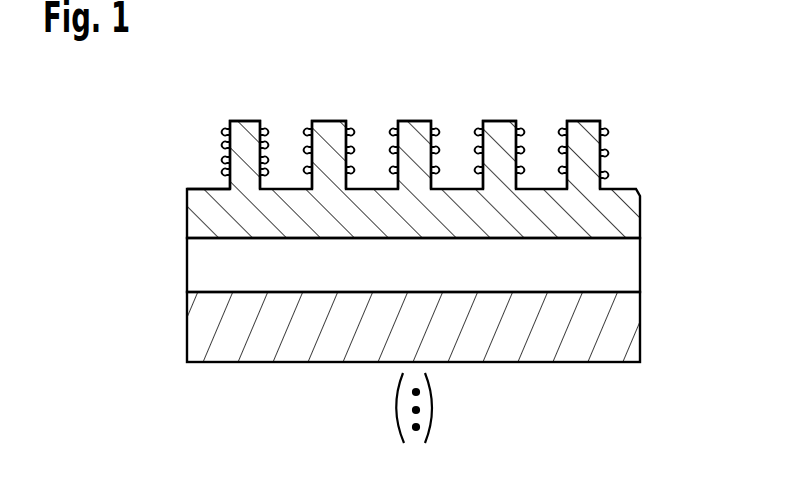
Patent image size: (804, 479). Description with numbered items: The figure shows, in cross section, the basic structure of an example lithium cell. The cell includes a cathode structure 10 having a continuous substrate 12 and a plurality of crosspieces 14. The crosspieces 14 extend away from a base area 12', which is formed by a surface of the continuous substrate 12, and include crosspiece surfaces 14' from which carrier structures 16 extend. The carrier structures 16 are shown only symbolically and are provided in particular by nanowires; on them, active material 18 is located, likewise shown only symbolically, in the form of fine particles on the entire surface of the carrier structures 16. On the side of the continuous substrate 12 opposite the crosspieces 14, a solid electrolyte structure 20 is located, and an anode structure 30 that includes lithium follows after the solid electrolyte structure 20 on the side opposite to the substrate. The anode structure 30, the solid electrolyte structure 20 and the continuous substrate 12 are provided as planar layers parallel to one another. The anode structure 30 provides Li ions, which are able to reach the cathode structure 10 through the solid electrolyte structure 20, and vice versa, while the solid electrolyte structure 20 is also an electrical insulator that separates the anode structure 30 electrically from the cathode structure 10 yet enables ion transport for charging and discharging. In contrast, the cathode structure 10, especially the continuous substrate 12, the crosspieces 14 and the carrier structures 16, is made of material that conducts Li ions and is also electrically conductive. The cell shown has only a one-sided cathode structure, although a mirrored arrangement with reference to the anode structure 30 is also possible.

The cathode structure 10 is at (97, 120).
The substrate 12 is at (380, 175).
The base area 12' is at (171, 173).
The crosspieces 14 is at (419, 118).
The crosspiece surfaces 14' is at (228, 118).
The carrier structures 16 is at (606, 132).
The active material 18 is at (684, 183).
The solid electrolyte structure 20 is at (198, 276).
The anode structure 30 is at (198, 320).